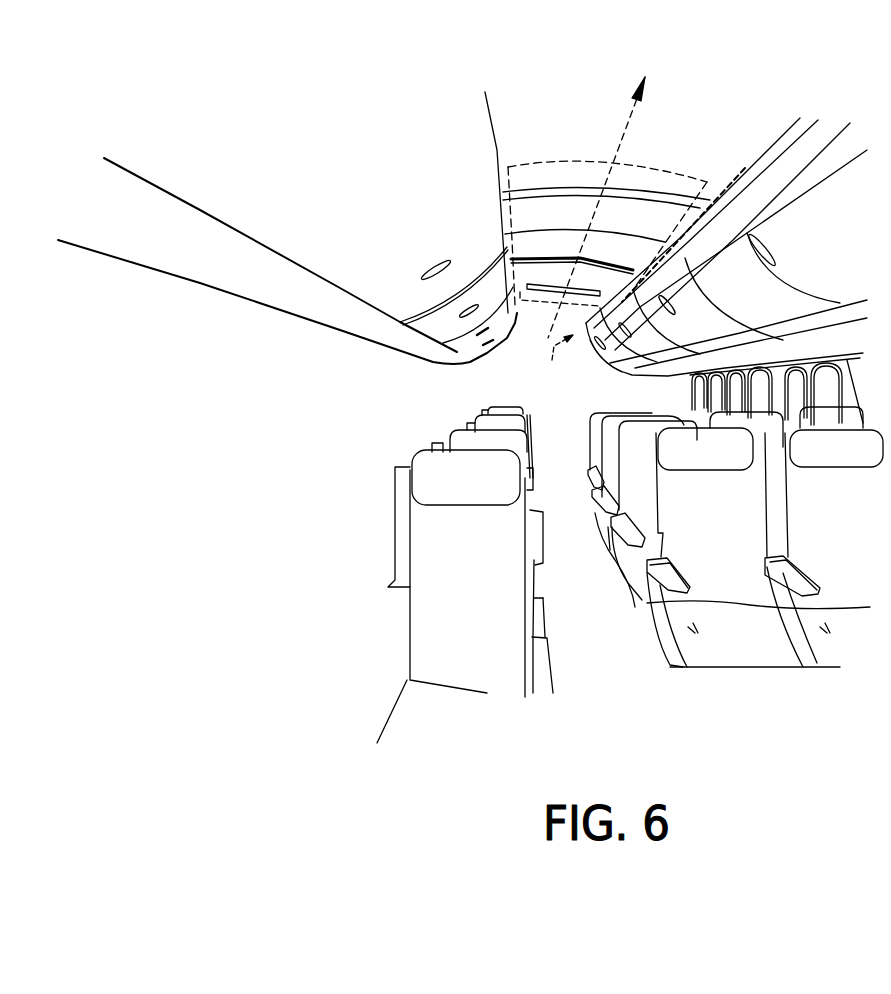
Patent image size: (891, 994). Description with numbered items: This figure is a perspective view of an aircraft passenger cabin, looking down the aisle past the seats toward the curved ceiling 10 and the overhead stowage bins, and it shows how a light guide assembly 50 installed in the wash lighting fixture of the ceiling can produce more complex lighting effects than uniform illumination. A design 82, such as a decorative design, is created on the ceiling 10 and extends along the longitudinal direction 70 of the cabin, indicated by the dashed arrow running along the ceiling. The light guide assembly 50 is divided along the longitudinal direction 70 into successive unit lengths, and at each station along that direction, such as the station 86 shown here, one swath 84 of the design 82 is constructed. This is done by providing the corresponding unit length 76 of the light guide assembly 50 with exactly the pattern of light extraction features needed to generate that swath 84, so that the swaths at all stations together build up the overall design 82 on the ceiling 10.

The ceiling 10 is at (507, 207).
The light guide assembly 50 is at (791, 137).
The longitudinal direction 70 is at (633, 104).
The unit length 76 is at (615, 337).
The design 82 is at (545, 178).
The swath 84 is at (540, 297).
The station 86 is at (612, 287).